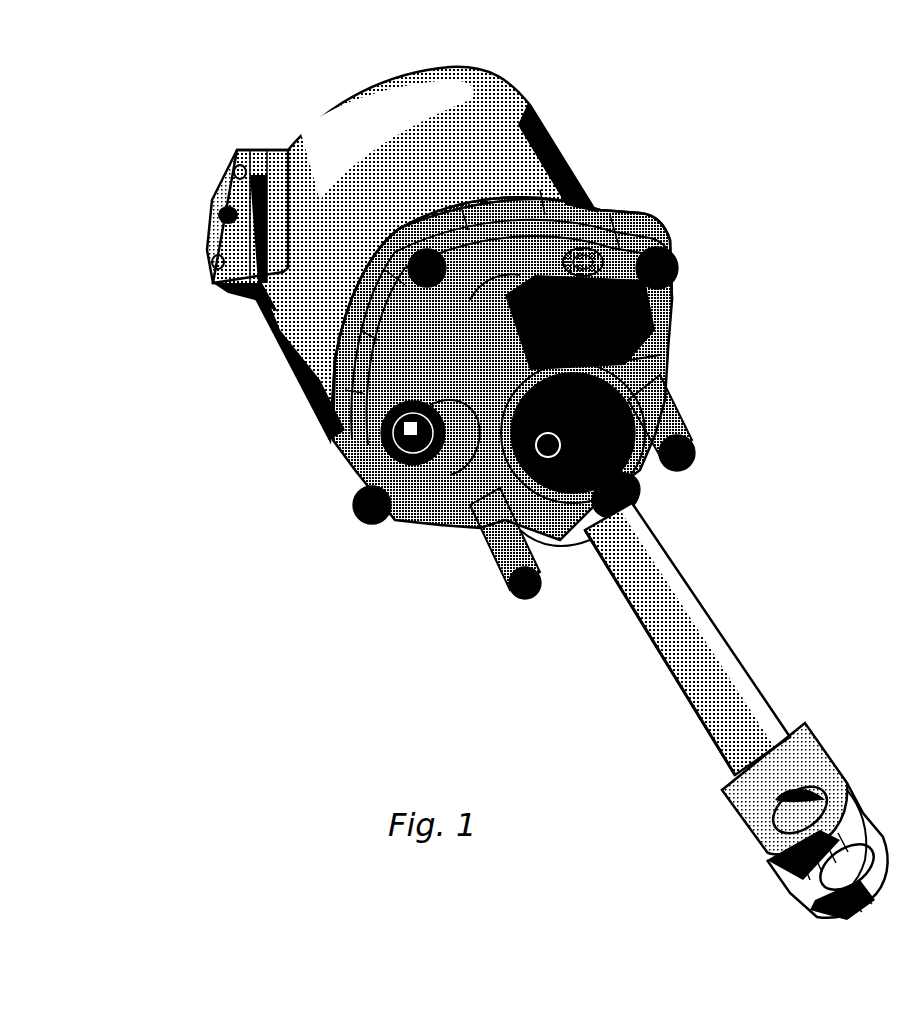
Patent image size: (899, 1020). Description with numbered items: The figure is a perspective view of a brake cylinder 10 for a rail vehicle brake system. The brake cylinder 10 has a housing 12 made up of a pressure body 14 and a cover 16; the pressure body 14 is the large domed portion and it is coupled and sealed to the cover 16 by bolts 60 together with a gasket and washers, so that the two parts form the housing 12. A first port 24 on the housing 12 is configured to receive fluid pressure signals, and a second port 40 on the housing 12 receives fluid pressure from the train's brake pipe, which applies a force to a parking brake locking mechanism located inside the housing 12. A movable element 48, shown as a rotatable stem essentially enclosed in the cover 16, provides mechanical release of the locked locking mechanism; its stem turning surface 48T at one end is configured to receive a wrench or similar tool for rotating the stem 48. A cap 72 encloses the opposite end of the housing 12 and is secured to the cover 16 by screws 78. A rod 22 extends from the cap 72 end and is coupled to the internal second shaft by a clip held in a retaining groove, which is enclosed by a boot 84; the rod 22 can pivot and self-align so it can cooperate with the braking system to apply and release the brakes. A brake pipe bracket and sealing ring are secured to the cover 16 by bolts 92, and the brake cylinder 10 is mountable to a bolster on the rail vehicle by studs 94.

The brake cylinder 10 is at (708, 102).
The housing 12 is at (678, 218).
The pressure body 14 is at (556, 150).
The cover 16 is at (676, 312).
The rod 22 is at (707, 613).
The first port 24 is at (213, 222).
The second port 40 is at (597, 212).
The movable element (rotatable stem) 48 is at (414, 462).
The stem turning surface 48T is at (410, 427).
The bolts 60 is at (678, 265).
The cap 72 is at (637, 460).
The screws 78 is at (545, 540).
The boot 84 is at (635, 497).
The bolts 92 is at (672, 350).
The studs 94 is at (693, 443).